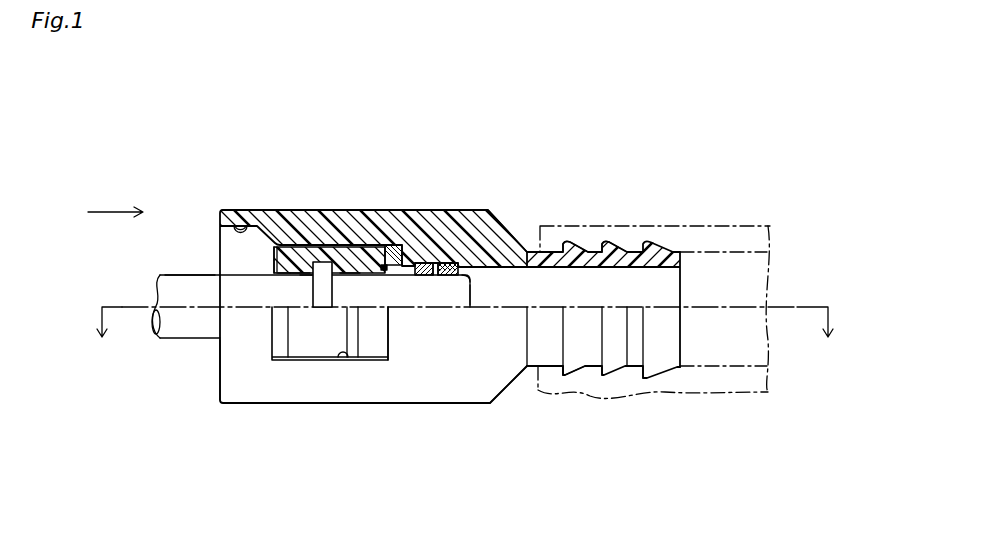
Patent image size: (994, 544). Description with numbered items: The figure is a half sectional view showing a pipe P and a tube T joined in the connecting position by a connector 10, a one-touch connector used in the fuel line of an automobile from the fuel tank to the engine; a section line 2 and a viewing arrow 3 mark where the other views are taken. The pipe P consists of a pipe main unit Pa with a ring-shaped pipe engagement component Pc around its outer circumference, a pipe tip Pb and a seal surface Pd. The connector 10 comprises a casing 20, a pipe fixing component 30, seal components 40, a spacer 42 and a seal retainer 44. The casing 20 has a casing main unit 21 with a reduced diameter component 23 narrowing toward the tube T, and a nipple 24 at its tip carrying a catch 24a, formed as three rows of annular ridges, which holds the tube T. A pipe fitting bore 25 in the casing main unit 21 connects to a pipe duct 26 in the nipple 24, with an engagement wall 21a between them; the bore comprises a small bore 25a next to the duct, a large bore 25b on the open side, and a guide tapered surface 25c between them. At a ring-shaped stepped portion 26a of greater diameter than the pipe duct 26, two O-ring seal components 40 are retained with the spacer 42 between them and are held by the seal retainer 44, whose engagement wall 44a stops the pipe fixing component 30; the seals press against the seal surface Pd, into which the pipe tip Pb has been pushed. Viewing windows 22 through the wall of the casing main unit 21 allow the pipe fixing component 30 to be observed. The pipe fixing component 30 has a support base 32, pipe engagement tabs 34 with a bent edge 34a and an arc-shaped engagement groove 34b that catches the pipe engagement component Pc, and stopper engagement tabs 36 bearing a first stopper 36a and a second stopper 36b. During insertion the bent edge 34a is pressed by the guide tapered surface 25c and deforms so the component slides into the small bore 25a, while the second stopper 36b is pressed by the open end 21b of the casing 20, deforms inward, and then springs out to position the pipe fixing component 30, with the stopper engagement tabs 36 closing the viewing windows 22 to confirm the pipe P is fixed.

The connector 10 is at (540, 157).
The casing 20 is at (427, 262).
The casing main unit 21 is at (470, 230).
The engagement wall 21a is at (400, 230).
The open end 21b is at (220, 371).
The viewing window 22 is at (346, 358).
The reduced diameter component 23 is at (492, 246).
The nipple 24 is at (605, 262).
The catch 24a is at (571, 246).
The pipe fitting bore 25 is at (219, 166).
The small bore 25a is at (347, 210).
The large bore 25b is at (250, 210).
The guide tapered surface 25c is at (288, 210).
The pipe duct 26 is at (580, 277).
The ring-shaped stepped portion 26a is at (462, 296).
The pipe fixing component 30 is at (337, 352).
The support base 32 is at (398, 325).
The pipe engagement tab 34 is at (147, 404).
The bent edge 34a is at (272, 275).
The engagement groove 34b is at (275, 282).
The stopper engagement tab 36 is at (299, 277).
The first stopper 36a is at (349, 277).
The second stopper 36b is at (283, 278).
The seal component 40 is at (425, 276).
The spacer 42 is at (448, 264).
The seal retainer 44 is at (394, 250).
The engagement wall 44a is at (379, 264).
The pipe P is at (197, 282).
The pipe main unit Pa is at (178, 282).
The pipe tip Pb is at (468, 285).
The pipe engagement component Pc is at (319, 325).
The seal surface Pd is at (440, 298).
The tube T is at (722, 226).
The section line 2— 2 is at (463, 339).
The arrow 3 is at (113, 211).